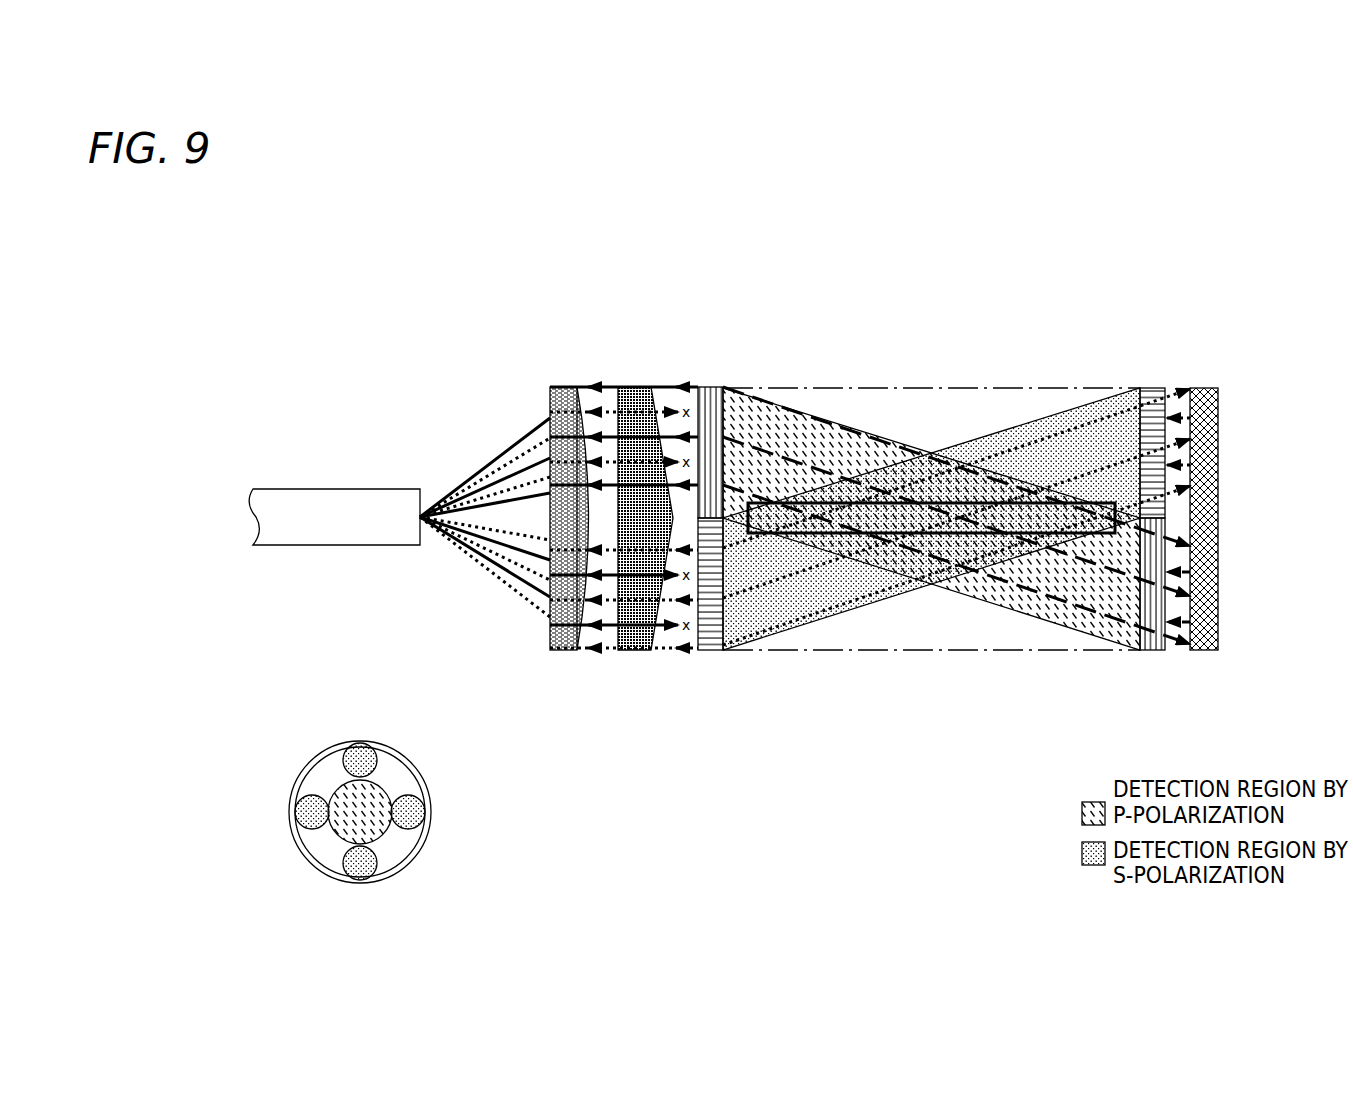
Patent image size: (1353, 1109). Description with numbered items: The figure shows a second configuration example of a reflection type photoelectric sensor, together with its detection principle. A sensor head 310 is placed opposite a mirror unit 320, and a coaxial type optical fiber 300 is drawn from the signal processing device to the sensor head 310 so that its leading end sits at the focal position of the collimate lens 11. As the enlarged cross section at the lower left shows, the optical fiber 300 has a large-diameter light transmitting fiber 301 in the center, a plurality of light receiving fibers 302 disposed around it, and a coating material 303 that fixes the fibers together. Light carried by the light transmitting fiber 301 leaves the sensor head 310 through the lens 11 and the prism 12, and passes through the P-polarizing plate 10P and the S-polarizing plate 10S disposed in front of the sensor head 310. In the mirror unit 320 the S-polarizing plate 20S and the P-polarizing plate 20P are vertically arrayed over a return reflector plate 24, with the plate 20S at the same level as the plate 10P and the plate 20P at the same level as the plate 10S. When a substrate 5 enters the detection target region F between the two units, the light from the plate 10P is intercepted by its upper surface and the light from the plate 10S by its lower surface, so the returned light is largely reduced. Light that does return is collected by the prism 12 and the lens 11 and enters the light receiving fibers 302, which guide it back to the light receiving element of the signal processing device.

The coaxial type optical fiber 300 is at (322, 500).
The light transmitting fiber 301 is at (382, 836).
The light receiving fibers 302 is at (375, 765).
The coating material 303 is at (298, 797).
The sensor head 310 is at (510, 340).
The mirror unit 320 is at (1190, 262).
The collimate lens 11 is at (565, 387).
The prism 12 is at (635, 387).
The P-polarizing plate 10P is at (713, 387).
The S-polarizing plate 10S is at (712, 650).
The S-polarizing plate 20S is at (1152, 388).
The P-polarizing plate 20P is at (1150, 650).
The return reflector plate 24 is at (1205, 388).
The substrate 5 is at (947, 535).
The detection target region F is at (1008, 388).